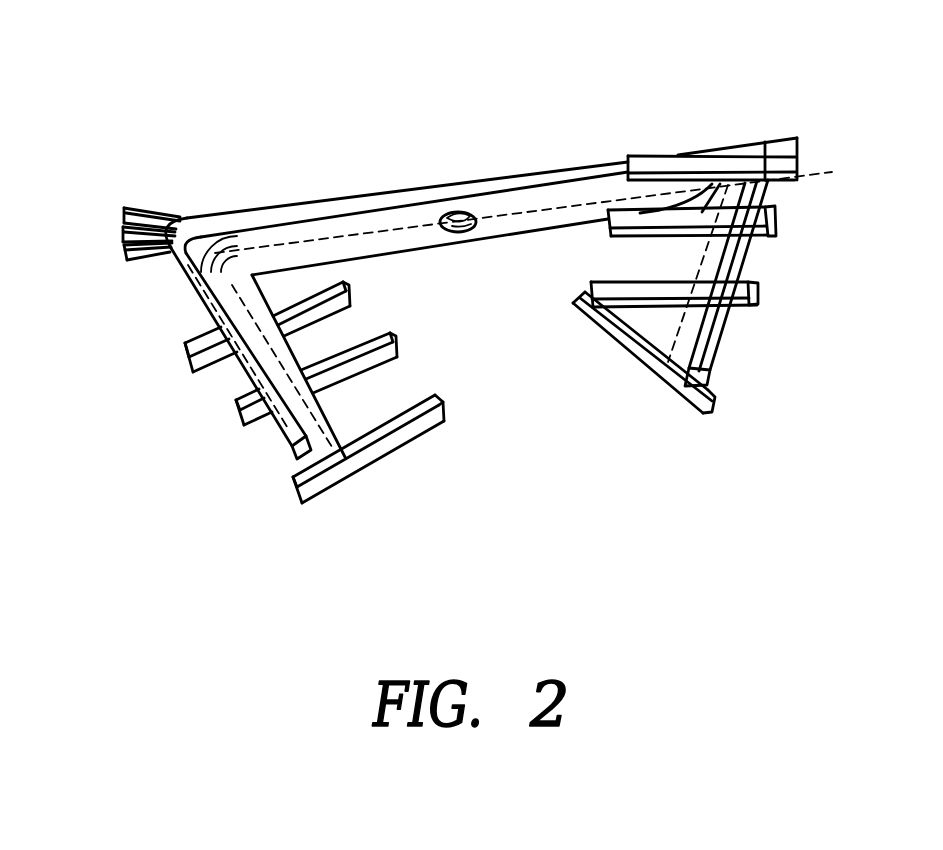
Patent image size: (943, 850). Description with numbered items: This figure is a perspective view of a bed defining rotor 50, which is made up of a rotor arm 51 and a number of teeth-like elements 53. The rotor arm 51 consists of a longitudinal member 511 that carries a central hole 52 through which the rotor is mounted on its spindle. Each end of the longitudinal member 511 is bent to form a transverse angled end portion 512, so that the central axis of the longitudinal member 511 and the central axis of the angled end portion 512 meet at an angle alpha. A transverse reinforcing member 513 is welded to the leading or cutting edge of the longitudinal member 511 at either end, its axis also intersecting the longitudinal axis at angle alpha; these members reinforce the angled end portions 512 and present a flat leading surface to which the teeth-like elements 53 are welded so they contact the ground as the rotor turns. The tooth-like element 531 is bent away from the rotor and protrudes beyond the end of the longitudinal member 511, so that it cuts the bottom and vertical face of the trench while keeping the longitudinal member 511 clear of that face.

The rotor 50 is at (450, 280).
The rotor arm 51 is at (466, 284).
The longitudinal member 511 is at (499, 192).
The transverse angled end portion 512 is at (455, 319).
The transverse reinforcing member 513 is at (480, 315).
The central hole 52 is at (461, 170).
The teeth-like element 53 is at (519, 378).
The tooth-like element 531 is at (433, 167).